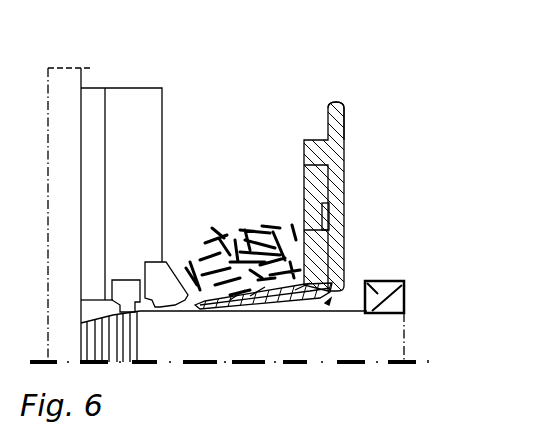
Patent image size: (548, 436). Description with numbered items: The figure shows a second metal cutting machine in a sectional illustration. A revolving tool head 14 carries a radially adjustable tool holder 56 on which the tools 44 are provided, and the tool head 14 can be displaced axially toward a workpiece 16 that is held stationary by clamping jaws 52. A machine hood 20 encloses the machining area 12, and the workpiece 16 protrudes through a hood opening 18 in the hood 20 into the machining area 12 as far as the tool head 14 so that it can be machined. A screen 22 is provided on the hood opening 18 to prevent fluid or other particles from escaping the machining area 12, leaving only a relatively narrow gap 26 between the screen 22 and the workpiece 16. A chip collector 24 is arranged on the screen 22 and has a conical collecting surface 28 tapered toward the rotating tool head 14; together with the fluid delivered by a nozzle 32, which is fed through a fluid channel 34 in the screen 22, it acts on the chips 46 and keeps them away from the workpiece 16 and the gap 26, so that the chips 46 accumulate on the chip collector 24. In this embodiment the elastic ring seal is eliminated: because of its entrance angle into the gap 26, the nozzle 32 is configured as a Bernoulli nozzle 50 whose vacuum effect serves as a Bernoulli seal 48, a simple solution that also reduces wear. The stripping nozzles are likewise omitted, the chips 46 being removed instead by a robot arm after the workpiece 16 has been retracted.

The machining area 12 is at (230, 154).
The tool head 14 is at (70, 97).
The workpiece 16 is at (238, 337).
The hood opening 18 is at (377, 255).
The machine hood 20 is at (340, 120).
The screen 22 is at (345, 212).
The chip collector 24 is at (195, 305).
The gap 26 is at (303, 310).
The conical collecting surface 28 is at (222, 302).
The nozzle 32 is at (253, 310).
The fluid channel 34 is at (345, 243).
The tools 44 is at (118, 280).
The chips 46 is at (262, 235).
The Bernoulli seal 48 is at (337, 305).
The Bernoulli nozzle 50 is at (240, 307).
The clamping jaws 52 is at (404, 290).
The tool holder 56 is at (120, 100).